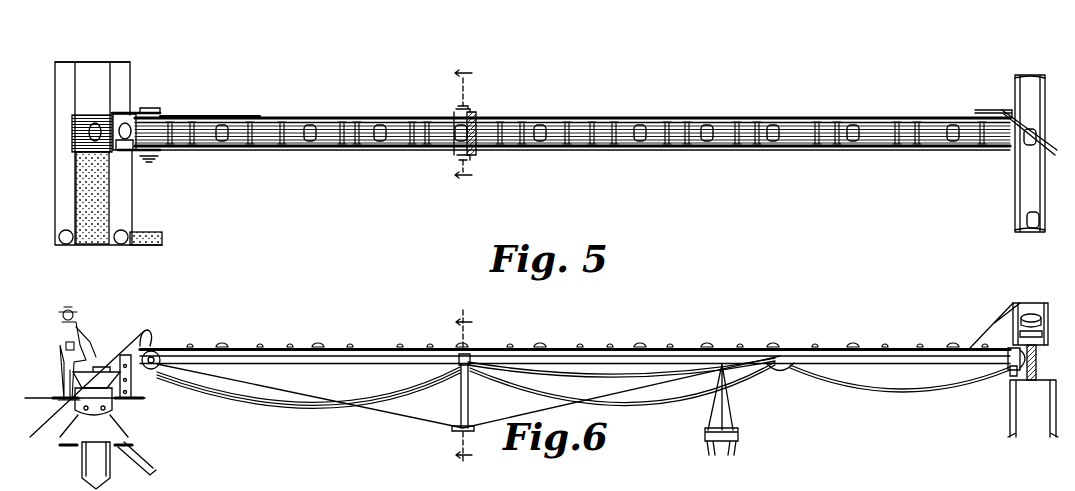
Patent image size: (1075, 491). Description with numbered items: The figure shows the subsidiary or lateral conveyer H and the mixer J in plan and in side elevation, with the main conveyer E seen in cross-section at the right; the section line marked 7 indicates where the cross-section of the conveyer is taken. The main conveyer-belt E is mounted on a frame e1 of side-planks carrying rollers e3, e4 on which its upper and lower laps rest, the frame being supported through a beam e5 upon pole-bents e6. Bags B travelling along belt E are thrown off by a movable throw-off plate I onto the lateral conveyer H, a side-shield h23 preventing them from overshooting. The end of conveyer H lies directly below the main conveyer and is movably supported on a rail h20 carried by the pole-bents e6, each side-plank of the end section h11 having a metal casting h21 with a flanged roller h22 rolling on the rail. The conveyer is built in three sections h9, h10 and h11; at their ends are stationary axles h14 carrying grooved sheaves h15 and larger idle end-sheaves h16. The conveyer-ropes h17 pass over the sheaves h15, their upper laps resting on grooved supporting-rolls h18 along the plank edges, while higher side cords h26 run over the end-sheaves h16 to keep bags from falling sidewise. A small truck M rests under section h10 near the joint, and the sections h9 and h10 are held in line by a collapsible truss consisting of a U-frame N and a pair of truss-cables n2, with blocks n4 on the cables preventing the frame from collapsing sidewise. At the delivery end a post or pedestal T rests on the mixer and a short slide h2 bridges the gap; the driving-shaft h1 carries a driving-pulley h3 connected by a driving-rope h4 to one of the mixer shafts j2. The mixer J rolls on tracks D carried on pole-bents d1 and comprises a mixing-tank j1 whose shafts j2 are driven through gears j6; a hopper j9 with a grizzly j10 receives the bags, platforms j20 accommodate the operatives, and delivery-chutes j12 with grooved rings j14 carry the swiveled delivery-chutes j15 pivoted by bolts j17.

In FIG. 5, the lateral conveyer H is at (572, 123).
In FIG. 6, the lateral conveyer H is at (575, 343).
In FIG. 5, the bags B is at (128, 126).
In FIG. 6, the bags B is at (1052, 298).
In FIG. 5, the mixer J is at (55, 182).
In FIG. 6, the mixer J is at (85, 412).
In FIG. 5, the conveyer-belt E is at (1025, 192).
In FIG. 6, the conveyer-belt E is at (1033, 362).
In FIG. 5, the throw-off plate I is at (1029, 125).
In FIG. 6, the throw-off plate I is at (1026, 313).
In FIG. 5, the U-frame N is at (458, 116).
In FIG. 6, the U-frame N is at (468, 400).
In FIG. 5, the post or pedestal T is at (139, 163).
In FIG. 6, the post or pedestal T is at (135, 388).
In FIG. 6, the tracks D is at (740, 436).
In FIG. 6, the truck M is at (728, 420).
In FIG. 5, the section line 7- 7 is at (463, 126).
In FIG. 6, the section line 7- 7 is at (464, 387).
In FIG. 6, the pole-bents d1 is at (717, 476).
In FIG. 5, the mixing-tank j1 is at (106, 210).
In FIG. 6, the mixing-tank j1 is at (74, 408).
In FIG. 5, the shafts j2 is at (88, 246).
In FIG. 6, the shafts j2 is at (93, 401).
In FIG. 6, the gears j6 is at (96, 465).
In FIG. 5, the hopper j9 is at (78, 113).
In FIG. 6, the hopper j9 is at (78, 381).
In FIG. 5, the grille-work or grizzly j10 is at (75, 136).
In FIG. 5, the delivery-chutes j12 is at (64, 245).
In FIG. 6, the delivery-chutes j12 is at (60, 444).
In FIG. 6, the grooved ring j14 is at (88, 425).
In FIG. 5, the swiveled delivery-trough or chute j15 is at (150, 233).
In FIG. 6, the swiveled delivery-trough or chute j15 is at (147, 463).
In FIG. 6, the bolt j17 is at (125, 448).
In FIG. 5, the platforms j20 is at (122, 66).
In FIG. 6, the platforms j20 is at (36, 388).
In FIG. 5, the driving-shaft h1 is at (158, 108).
In FIG. 6, the driving-shaft h1 is at (158, 348).
In FIG. 5, the slide h2 is at (124, 115).
In FIG. 6, the slide h2 is at (140, 333).
In FIG. 5, the driving-pulley h3 is at (182, 116).
In FIG. 6, the driving-pulley h3 is at (154, 358).
In FIG. 5, the driving-rope h4 is at (122, 115).
In FIG. 6, the driving-rope h4 is at (160, 380).
In FIG. 5, the conveyer section h9 is at (392, 118).
In FIG. 6, the conveyer section h9 is at (336, 360).
In FIG. 5, the conveyer section h10 is at (635, 118).
In FIG. 6, the conveyer section h10 is at (586, 352).
In FIG. 5, the conveyer section h11 is at (852, 118).
In FIG. 6, the conveyer section h11 is at (910, 362).
In FIG. 5, the stationary axles h14 is at (468, 112).
In FIG. 6, the stationary axles h14 is at (467, 354).
In FIG. 5, the grooved sheave h15 is at (160, 150).
In FIG. 6, the end-sheaves h16 is at (452, 368).
In FIG. 5, the conveyer-ropes h17 is at (312, 140).
In FIG. 6, the conveyer-ropes h17 is at (418, 348).
In FIG. 5, the supporting-rolls h18 is at (398, 150).
In FIG. 6, the supporting-rolls h18 is at (298, 350).
In FIG. 6, the rails h20 is at (1014, 378).
In FIG. 6, the metal casting h21 is at (1006, 370).
In FIG. 6, the flanged roller h22 is at (1008, 376).
In FIG. 5, the side-shield h23 is at (1000, 110).
In FIG. 6, the side-shield h23 is at (1000, 318).
In FIG. 5, the cords h26 is at (530, 118).
In FIG. 6, the cords h26 is at (296, 346).
In FIG. 5, the truss-ropes or cables n2 is at (200, 115).
In FIG. 6, the truss-ropes or cables n2 is at (546, 412).
In FIG. 6, the blocks n4 is at (457, 425).
In FIG. 6, the frame e1 is at (1043, 334).
In FIG. 6, the rollers e3 is at (1042, 322).
In FIG. 6, the rollers e4 is at (1040, 348).
In FIG. 6, the beam e5 is at (1038, 378).
In FIG. 6, the pole-bents e6 is at (1050, 432).